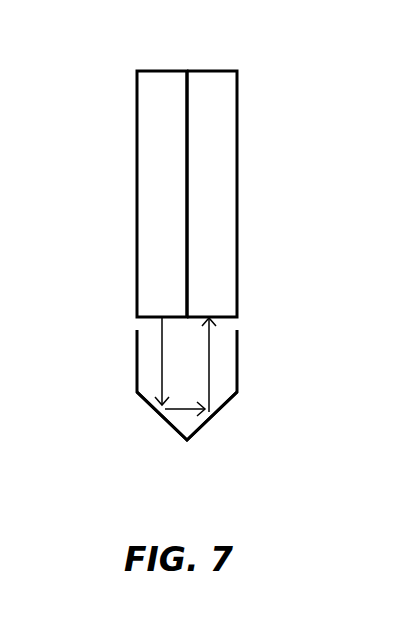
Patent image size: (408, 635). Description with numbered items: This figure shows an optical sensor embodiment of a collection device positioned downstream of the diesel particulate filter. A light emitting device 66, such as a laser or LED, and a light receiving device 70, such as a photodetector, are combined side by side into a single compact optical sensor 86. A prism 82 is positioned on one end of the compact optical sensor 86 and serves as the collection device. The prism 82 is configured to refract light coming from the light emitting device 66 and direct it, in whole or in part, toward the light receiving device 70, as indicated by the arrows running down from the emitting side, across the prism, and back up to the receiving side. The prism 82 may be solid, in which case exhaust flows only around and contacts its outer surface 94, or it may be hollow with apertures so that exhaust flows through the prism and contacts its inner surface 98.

The light emitting device 66 is at (150, 99).
The light receiving device 70 is at (225, 101).
The compact optical sensor 86 is at (189, 62).
The prism 82 is at (228, 355).
The outer surface 94 is at (223, 405).
The inner surface 98 is at (137, 358).